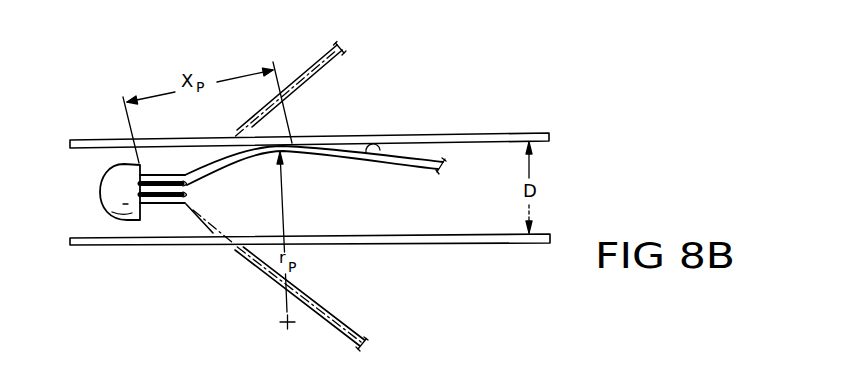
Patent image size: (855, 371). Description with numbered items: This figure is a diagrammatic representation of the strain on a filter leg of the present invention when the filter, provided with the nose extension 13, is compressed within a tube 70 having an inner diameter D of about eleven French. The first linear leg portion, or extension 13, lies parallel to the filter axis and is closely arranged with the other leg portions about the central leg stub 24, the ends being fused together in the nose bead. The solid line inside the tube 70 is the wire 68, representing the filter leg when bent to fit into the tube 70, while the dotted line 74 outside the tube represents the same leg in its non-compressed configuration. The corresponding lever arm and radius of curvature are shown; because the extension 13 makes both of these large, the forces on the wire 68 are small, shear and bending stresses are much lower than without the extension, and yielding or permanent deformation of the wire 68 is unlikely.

The first linear leg portion 13 is at (150, 207).
The central leg stub 24 is at (188, 189).
The wire 68 is at (384, 155).
The tube 70 is at (468, 134).
The dotted line 74 is at (327, 52).